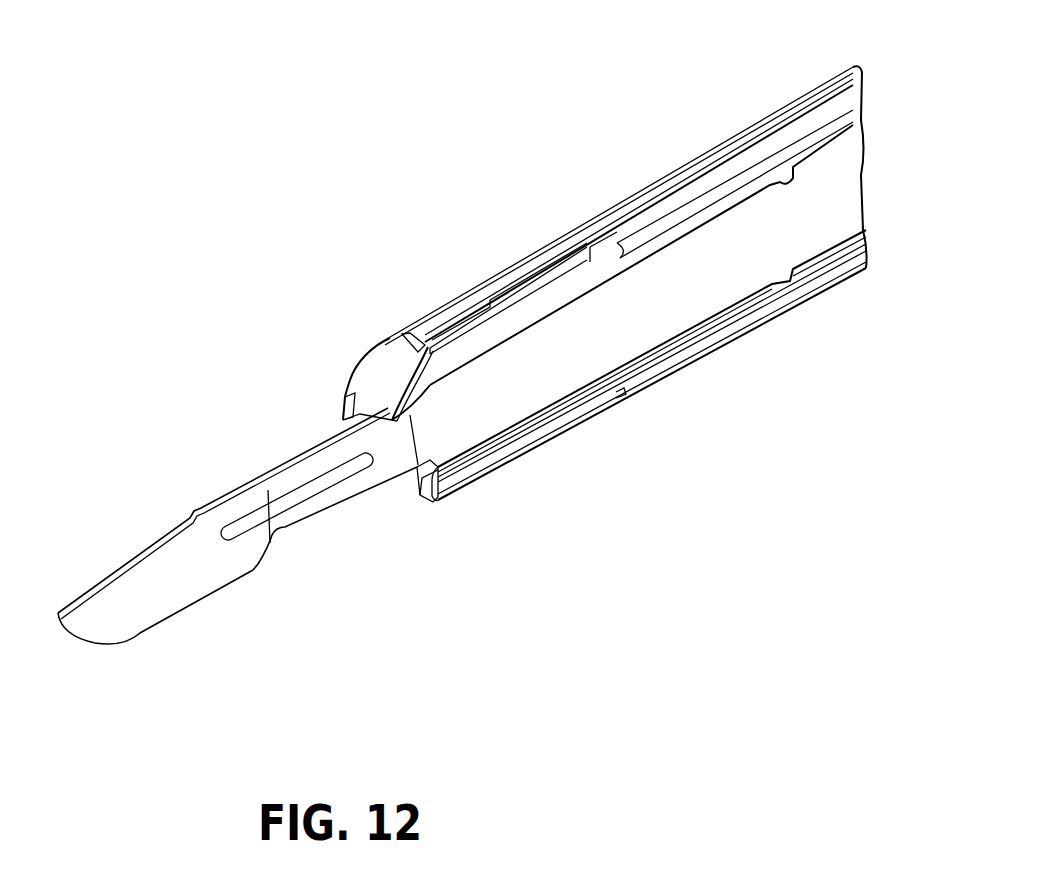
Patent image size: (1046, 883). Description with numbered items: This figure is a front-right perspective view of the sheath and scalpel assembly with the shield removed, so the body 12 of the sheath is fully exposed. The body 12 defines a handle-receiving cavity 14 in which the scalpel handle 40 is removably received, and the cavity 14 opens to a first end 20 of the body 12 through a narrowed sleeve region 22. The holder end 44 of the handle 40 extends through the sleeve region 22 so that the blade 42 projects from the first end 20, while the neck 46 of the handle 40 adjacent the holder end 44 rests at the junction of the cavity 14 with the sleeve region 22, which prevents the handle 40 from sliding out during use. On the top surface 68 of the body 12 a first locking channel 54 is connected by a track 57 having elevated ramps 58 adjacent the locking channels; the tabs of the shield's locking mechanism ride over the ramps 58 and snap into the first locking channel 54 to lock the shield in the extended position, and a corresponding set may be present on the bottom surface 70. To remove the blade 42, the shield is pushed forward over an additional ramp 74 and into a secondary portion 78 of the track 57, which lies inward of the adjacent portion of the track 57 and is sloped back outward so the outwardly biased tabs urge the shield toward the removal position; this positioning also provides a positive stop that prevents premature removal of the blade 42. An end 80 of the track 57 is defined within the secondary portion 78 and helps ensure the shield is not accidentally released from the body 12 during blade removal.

The body 12 is at (765, 110).
The handle-receiving cavity 14 is at (626, 365).
The first end 20 is at (385, 353).
The sleeve region 22 is at (346, 410).
The handle 40 is at (677, 302).
The blade 42 is at (162, 598).
The holder end 44 is at (213, 505).
The neck 46 is at (417, 430).
The first locking channel 54 is at (587, 233).
The track 57 is at (743, 158).
The elevated ramps 58 is at (627, 233).
The top surface 68 is at (613, 218).
The bottom surface 70 is at (322, 487).
The additional ramp 74 is at (583, 260).
The secondary portion of track 78 is at (472, 315).
The end of track 80 is at (428, 338).